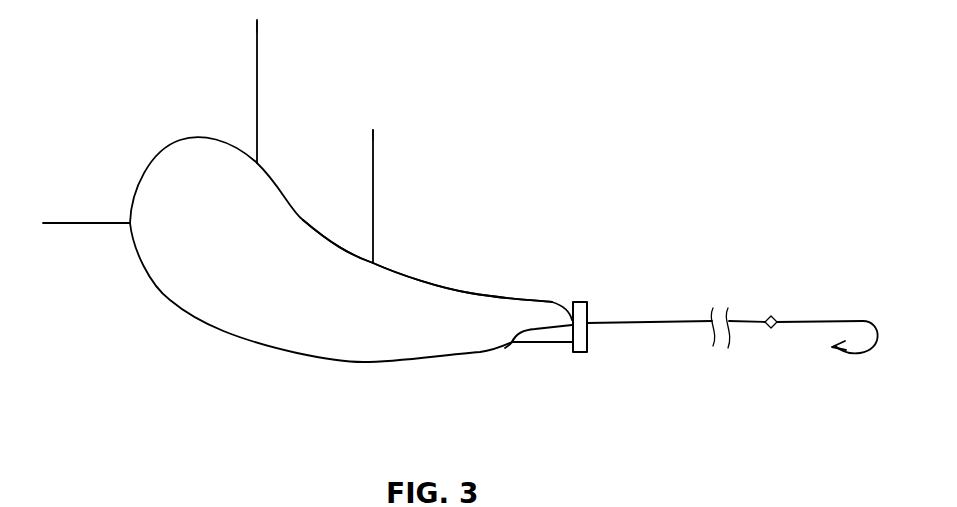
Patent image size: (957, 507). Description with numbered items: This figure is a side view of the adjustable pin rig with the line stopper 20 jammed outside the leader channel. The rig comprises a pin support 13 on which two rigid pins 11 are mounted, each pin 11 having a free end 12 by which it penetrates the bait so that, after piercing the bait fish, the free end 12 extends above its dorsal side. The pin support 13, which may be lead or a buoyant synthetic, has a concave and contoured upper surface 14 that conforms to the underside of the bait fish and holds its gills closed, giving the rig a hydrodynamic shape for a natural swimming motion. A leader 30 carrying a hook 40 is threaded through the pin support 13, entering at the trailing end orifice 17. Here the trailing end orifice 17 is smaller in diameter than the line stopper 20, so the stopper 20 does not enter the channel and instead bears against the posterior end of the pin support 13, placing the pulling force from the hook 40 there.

The pin 11 is at (257, 86).
The free end 12 is at (257, 28).
The pin support 13 is at (233, 337).
The upper surface 14 is at (385, 267).
The trailing end orifice 17 is at (512, 344).
The line stopper 20 is at (590, 309).
The leader 30 is at (88, 224).
The hook 40 is at (810, 320).